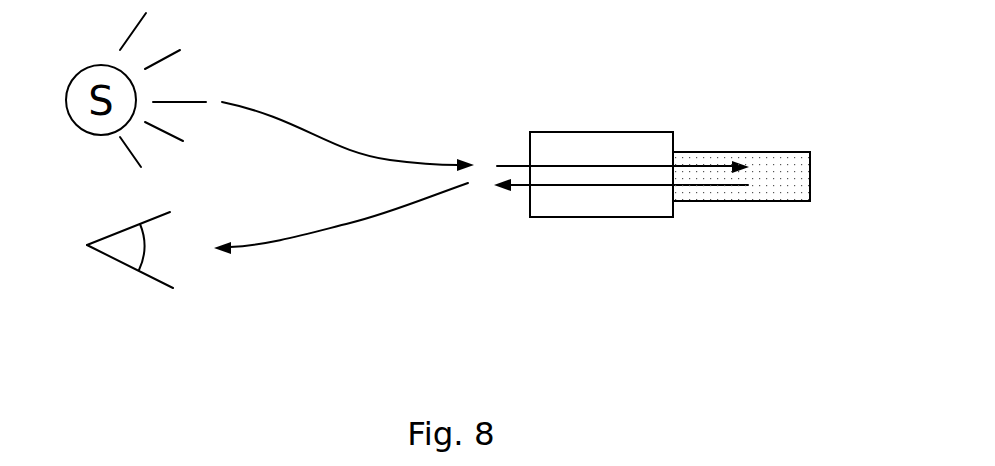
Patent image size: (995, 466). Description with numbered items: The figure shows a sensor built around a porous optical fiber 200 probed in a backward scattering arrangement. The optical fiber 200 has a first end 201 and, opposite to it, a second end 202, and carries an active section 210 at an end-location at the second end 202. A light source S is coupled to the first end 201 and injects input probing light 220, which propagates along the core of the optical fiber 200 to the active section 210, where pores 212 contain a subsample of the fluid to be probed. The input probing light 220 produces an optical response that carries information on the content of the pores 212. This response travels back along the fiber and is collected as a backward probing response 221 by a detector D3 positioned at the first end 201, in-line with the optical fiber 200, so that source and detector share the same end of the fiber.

The optical fiber 200 is at (595, 207).
The first end 201 is at (520, 245).
The second end 202 is at (776, 176).
The active section 210 is at (765, 167).
The pores 212 is at (777, 185).
The input probing light 220 is at (315, 128).
The backward probing response 221 is at (345, 225).
The detector D3 is at (125, 252).